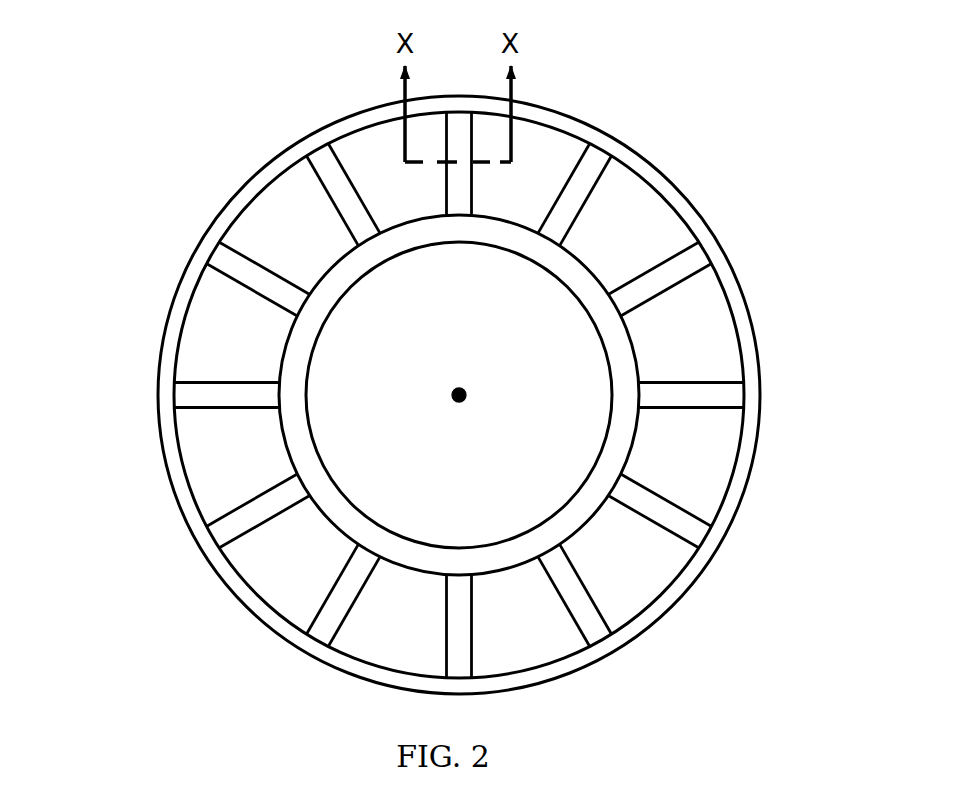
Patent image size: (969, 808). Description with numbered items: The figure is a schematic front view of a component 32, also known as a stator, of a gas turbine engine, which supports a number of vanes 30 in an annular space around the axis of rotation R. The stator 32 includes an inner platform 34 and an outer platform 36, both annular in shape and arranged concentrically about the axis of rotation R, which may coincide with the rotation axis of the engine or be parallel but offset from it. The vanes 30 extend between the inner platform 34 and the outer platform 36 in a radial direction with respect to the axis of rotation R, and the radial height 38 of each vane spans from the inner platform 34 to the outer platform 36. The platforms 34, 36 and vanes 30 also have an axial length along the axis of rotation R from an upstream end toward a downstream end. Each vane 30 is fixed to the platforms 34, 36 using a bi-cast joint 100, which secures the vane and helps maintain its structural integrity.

The vane 30 is at (455, 182).
The component 32 is at (448, 372).
The inner platform 34 is at (298, 352).
The outer platform 36 is at (172, 433).
The radial height 38 is at (305, 513).
The bi-cast joint 100 is at (640, 397).
The axis of rotation R is at (462, 392).